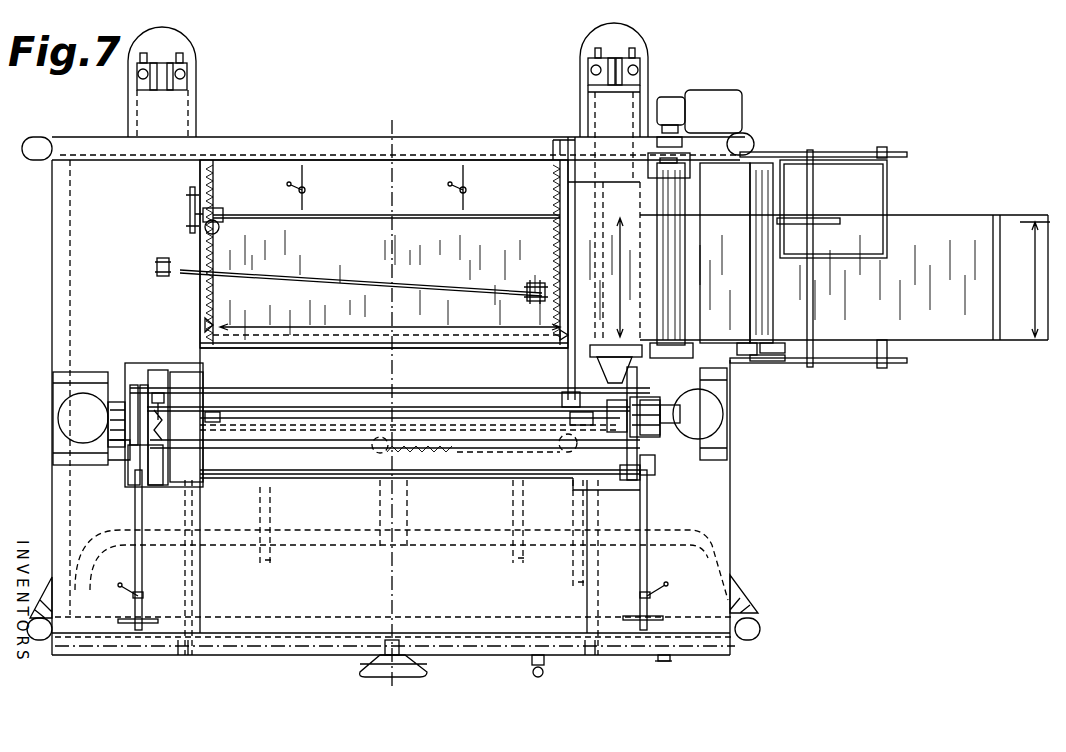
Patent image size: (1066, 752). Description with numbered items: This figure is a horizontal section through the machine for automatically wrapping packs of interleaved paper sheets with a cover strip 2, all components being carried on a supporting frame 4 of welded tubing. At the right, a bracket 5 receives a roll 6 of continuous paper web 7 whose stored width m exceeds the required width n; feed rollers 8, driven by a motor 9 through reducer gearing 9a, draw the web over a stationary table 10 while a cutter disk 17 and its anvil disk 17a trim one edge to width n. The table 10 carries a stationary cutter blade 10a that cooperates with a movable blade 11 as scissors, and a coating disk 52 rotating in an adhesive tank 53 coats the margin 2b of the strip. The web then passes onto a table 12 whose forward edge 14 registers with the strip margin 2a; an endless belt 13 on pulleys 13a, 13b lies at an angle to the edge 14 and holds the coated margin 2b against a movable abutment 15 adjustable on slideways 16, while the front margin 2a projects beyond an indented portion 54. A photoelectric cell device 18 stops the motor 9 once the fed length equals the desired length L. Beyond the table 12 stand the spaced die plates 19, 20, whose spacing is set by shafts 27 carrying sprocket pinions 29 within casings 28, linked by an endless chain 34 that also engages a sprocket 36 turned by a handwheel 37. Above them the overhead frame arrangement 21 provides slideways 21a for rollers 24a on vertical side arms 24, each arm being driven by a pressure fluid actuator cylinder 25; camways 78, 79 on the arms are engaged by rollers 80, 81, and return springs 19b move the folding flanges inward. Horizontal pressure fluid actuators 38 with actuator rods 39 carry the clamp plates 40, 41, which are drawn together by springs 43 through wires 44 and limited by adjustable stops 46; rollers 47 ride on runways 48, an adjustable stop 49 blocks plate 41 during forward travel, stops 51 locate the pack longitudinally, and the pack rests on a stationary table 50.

The cover strip 2 is at (384, 254).
The front margin of cover strip 2a is at (246, 340).
The coated margin of cover strip 2b is at (318, 218).
The supporting frame 4 is at (60, 500).
The bracket 5 is at (823, 152).
The roll 6 is at (913, 214).
The paper web 7 is at (738, 232).
The feed rollers 8 is at (668, 240).
The motor 9 is at (710, 103).
The reducer gearing 9a is at (690, 100).
The stationary table 10 is at (610, 193).
The stationary cutter blade 10a is at (565, 173).
The movable blade 11 is at (560, 335).
The table 12 is at (205, 325).
The endless belt 13 is at (393, 280).
The pulley 13a is at (535, 283).
The pulley 13b is at (160, 262).
The forward edge of table 14 is at (290, 350).
The movable abutment 15 is at (382, 187).
The slideways 16 is at (305, 182).
The cutter disk 17 is at (793, 360).
The anvil disk 17a is at (740, 365).
The photoelectric cell device 18 is at (218, 228).
The die plate 19 is at (358, 413).
The return springs 19b is at (165, 380).
The die plate 20 is at (303, 425).
The overhead frame arrangement 21 is at (118, 392).
The slideways 21a is at (110, 447).
The vertical side arms 24 is at (132, 460).
The rollers 24a is at (126, 393).
The pressure fluid actuator cylinder 25 is at (60, 410).
The shaft 27 is at (192, 592).
The casing 28 is at (98, 648).
The sprocket pinion 29 is at (180, 647).
The endless chain 34 is at (248, 647).
The sprocket 36 is at (402, 645).
The handwheel 37 is at (358, 670).
The pressure fluid actuators 38 is at (194, 119).
The actuator rod 39 is at (580, 405).
The clamp plate 40 is at (420, 425).
The clamp plate 41 is at (452, 408).
The springs 43 is at (450, 440).
The wires 44 is at (505, 452).
The adjustable stops 46 is at (590, 420).
The rollers 47 is at (652, 470).
The runways 48 is at (645, 513).
The stop 49 is at (140, 597).
The stationary table 50 is at (460, 592).
The stops 51 is at (215, 417).
The coating disk 52 is at (822, 218).
The tank 53 is at (848, 258).
The indented portion 54 is at (345, 332).
The camway 78 is at (157, 488).
The camway 79 is at (148, 378).
The roller 80 is at (134, 498).
The roller 81 is at (140, 378).
The cover strip length L is at (432, 318).
The web width m is at (1037, 279).
The cover strip width n is at (612, 277).